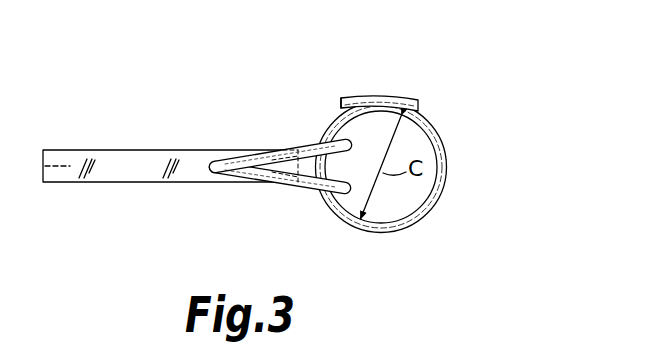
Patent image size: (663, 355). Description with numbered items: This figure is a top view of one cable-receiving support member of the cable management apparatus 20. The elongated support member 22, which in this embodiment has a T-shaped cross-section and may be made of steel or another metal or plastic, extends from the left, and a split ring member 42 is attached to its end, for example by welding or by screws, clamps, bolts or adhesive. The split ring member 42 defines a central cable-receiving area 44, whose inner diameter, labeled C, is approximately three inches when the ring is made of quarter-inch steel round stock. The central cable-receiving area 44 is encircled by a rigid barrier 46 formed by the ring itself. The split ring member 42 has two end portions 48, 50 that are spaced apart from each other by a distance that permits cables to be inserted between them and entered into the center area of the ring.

The cable management apparatus 20 is at (125, 147).
The elongated support member 22 is at (284, 149).
The split ring member 42 is at (383, 175).
The central cable-receiving area 44 is at (392, 203).
The rigid barrier 46 is at (412, 239).
The end portion 48 is at (400, 98).
The end portion 50 is at (345, 99).